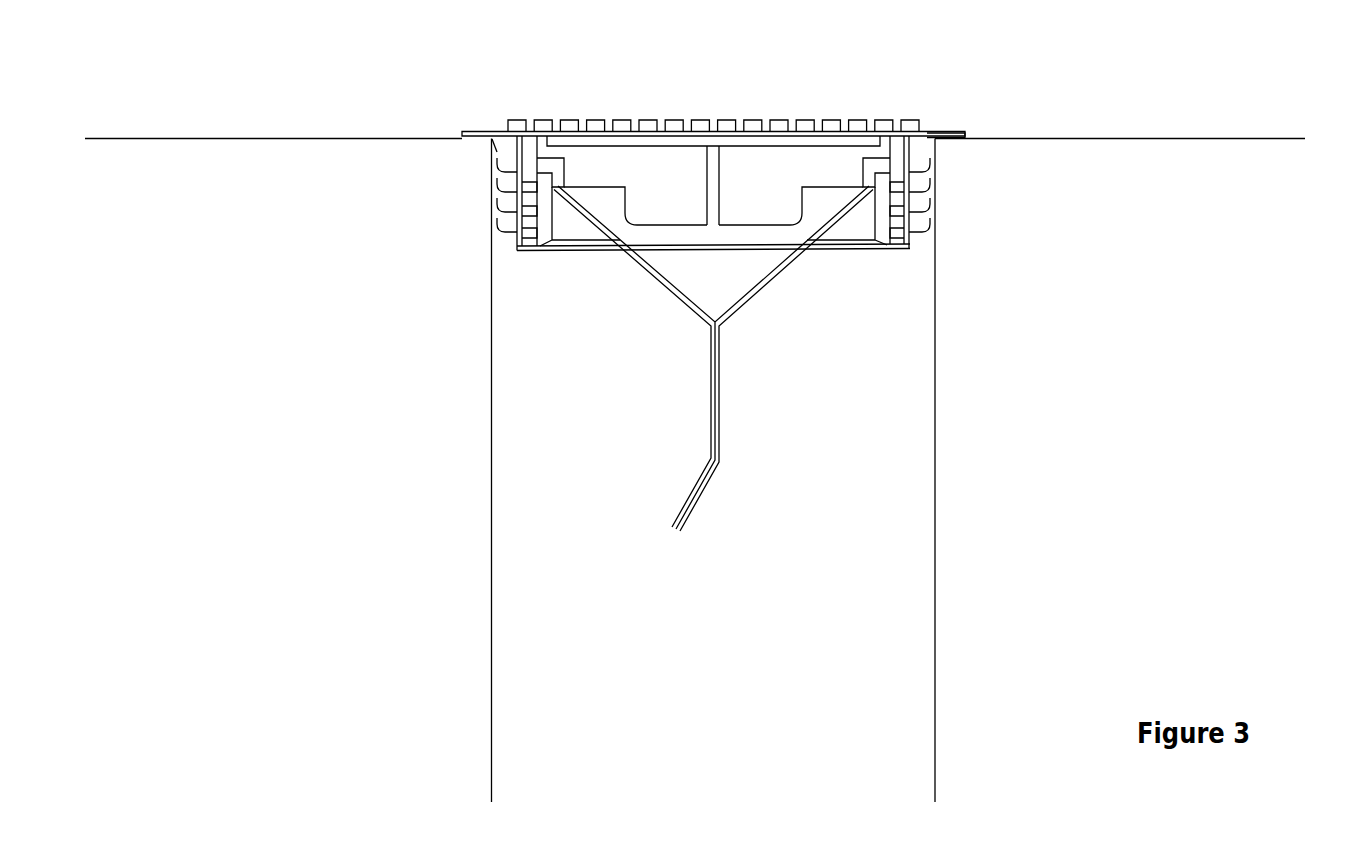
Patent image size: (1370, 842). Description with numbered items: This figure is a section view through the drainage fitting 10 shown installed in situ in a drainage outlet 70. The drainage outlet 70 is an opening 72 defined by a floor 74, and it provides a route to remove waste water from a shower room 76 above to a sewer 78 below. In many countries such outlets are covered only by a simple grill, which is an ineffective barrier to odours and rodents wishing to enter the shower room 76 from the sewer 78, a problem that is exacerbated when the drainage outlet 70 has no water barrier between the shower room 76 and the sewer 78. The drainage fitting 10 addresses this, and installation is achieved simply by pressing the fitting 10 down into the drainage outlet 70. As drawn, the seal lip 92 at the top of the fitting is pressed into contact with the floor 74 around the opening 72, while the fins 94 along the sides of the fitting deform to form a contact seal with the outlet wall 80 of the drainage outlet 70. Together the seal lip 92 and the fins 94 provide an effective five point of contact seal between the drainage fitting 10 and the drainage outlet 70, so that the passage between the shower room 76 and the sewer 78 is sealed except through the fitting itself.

The drainage fitting 10 is at (838, 106).
The drainage outlet 70 is at (627, 119).
The opening 72 is at (493, 136).
The floor 74 is at (330, 138).
The shower room 76 is at (532, 35).
The sewer 78 is at (738, 691).
The outlet wall 80 is at (494, 465).
The seal lip 92 is at (953, 131).
The fins 94 is at (930, 162).